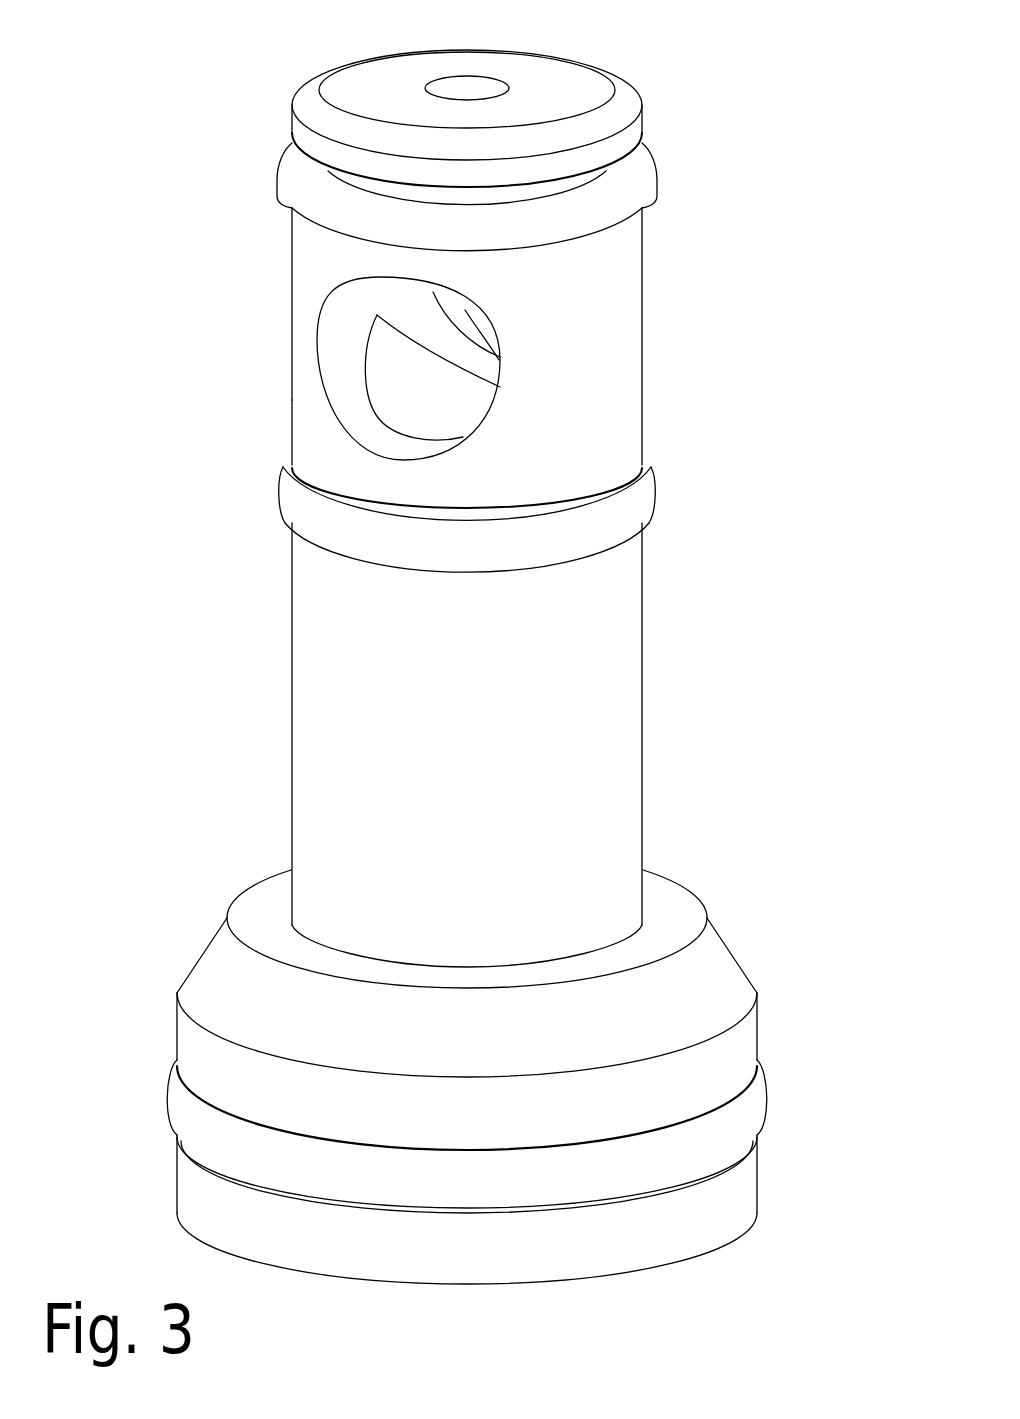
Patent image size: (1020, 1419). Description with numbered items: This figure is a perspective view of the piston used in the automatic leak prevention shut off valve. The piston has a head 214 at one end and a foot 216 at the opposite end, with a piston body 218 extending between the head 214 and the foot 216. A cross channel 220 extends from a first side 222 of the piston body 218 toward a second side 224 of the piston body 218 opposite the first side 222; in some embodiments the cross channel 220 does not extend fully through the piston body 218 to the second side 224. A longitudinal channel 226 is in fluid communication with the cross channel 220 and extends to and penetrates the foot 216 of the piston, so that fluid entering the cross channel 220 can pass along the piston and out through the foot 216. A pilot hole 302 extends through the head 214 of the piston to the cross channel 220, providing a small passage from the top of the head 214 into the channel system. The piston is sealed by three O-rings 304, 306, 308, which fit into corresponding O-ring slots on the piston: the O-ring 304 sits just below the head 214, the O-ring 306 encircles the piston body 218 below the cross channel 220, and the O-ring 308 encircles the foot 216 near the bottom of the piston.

The pilot hole 302 is at (460, 86).
The head 214 is at (578, 90).
The O-ring 304 is at (652, 181).
The second side 224 is at (665, 310).
The cross channel 220 is at (315, 355).
The longitudinal channel 226 is at (459, 418).
The first side 222 is at (315, 462).
The O-ring 306 is at (653, 490).
The piston body 218 is at (643, 734).
The foot 216 is at (650, 1268).
The O-ring 308 is at (775, 1106).